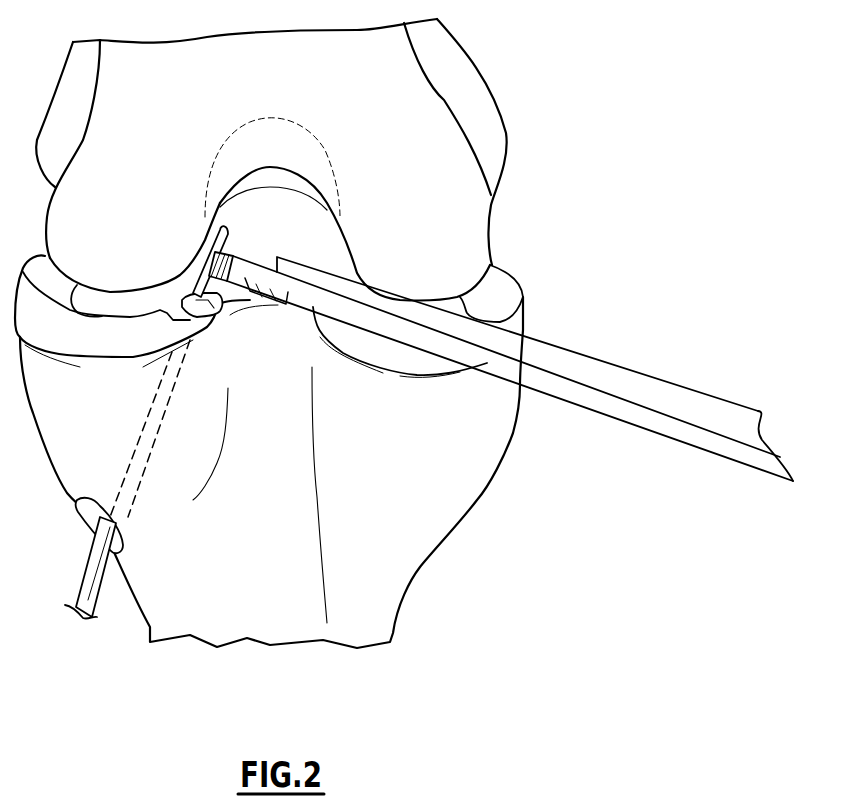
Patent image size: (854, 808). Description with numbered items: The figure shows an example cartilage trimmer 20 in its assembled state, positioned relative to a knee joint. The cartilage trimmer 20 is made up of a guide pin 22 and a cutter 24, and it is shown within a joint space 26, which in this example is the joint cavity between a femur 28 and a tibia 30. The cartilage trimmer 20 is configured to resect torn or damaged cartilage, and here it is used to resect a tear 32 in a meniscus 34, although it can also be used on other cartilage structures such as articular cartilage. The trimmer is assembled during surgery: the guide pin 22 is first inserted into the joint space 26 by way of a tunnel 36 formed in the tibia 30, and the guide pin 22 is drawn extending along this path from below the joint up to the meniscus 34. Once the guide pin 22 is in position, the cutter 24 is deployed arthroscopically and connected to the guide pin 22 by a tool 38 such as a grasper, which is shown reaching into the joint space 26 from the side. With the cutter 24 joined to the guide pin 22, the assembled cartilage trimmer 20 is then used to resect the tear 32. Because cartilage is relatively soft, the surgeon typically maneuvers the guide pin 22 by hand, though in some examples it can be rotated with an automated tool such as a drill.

The cartilage trimmer 20 is at (233, 240).
The guide pin 22 is at (200, 297).
The cutter 24 is at (256, 253).
The joint space 26 is at (226, 287).
The femur 28 is at (402, 117).
The tibia 30 is at (413, 507).
The tear 32 is at (197, 292).
The meniscus 34 is at (105, 345).
The tunnel 36 is at (85, 500).
The tool 38 is at (542, 361).